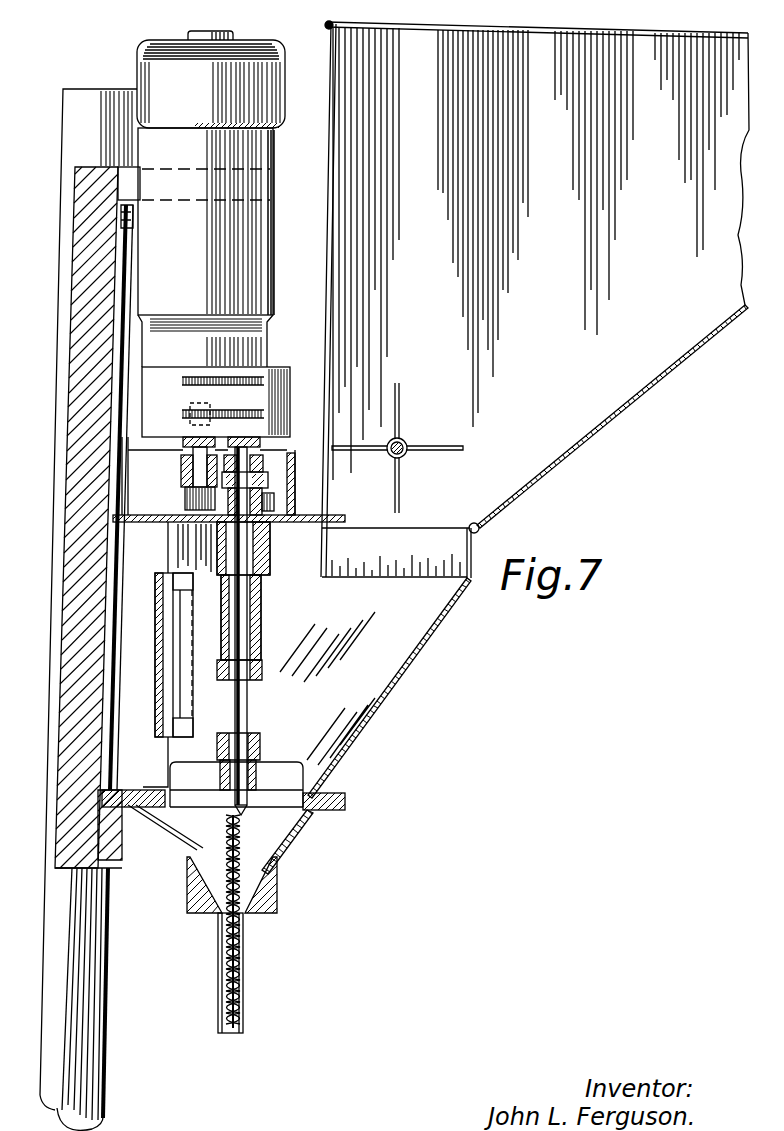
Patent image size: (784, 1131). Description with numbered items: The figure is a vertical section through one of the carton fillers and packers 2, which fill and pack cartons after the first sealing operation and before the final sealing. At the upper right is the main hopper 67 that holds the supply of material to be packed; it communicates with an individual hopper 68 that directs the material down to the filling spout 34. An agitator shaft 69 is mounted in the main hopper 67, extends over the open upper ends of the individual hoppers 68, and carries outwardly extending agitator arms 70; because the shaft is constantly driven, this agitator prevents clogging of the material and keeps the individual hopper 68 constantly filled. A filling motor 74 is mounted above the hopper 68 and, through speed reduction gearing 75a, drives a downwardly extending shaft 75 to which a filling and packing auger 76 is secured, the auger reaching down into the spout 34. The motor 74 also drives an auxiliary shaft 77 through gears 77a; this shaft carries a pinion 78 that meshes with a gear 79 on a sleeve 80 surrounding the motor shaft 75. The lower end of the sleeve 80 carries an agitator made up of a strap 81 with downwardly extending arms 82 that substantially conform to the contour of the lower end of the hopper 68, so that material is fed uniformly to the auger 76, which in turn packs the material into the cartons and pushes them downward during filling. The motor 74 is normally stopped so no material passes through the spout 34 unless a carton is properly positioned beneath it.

The carton filler and packer 2 is at (398, 704).
The filling spout 34 is at (251, 977).
The main hopper 67 is at (636, 380).
The individual hopper 68 is at (410, 627).
The agitator shaft 69 is at (406, 441).
The agitator arm 70 is at (463, 448).
The filling motor 74 is at (168, 55).
The motor shaft 75 is at (248, 708).
The speed reduction gearing 75a is at (268, 372).
The filling and packing auger 76 is at (245, 935).
The auxiliary shaft 77 is at (193, 472).
The gears 77a is at (200, 414).
The pinion 78 is at (185, 500).
The gear 79 is at (273, 507).
The sleeve 80 is at (260, 645).
The strap 81 is at (284, 762).
The agitator arm 82 is at (233, 864).